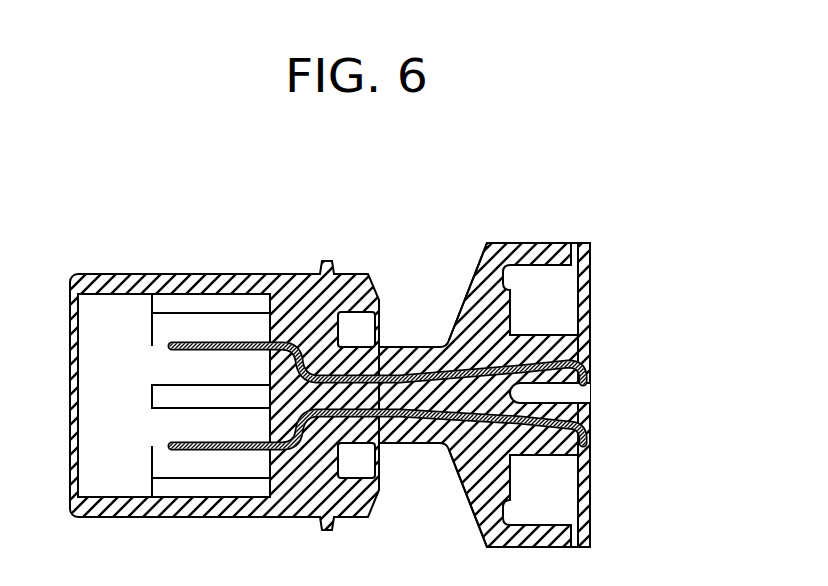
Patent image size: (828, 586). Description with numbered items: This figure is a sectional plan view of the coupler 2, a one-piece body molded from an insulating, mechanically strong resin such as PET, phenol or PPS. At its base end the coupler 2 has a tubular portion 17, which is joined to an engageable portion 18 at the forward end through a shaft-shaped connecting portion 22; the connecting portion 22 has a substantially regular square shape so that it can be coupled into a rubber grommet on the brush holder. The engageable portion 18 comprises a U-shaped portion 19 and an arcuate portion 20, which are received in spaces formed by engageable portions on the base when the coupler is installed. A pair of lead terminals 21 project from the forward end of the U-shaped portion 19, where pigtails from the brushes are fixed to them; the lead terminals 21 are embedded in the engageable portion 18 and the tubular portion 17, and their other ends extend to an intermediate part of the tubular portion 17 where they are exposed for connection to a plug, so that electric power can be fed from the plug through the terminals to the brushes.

The coupler 2 is at (369, 371).
The tubular portion 17 is at (238, 273).
The engageable portion 18 is at (535, 235).
The U-shaped portion 19 is at (591, 378).
The arcuate portion 20 is at (468, 500).
The lead terminal 21 is at (591, 283).
The connecting portion 22 is at (418, 347).